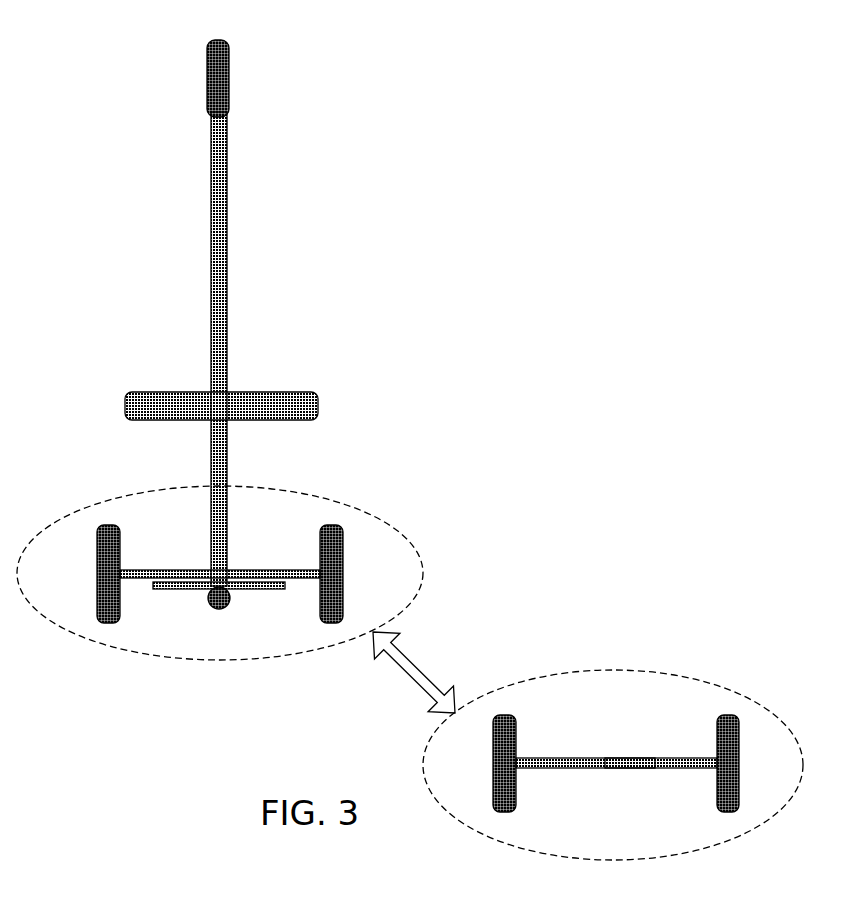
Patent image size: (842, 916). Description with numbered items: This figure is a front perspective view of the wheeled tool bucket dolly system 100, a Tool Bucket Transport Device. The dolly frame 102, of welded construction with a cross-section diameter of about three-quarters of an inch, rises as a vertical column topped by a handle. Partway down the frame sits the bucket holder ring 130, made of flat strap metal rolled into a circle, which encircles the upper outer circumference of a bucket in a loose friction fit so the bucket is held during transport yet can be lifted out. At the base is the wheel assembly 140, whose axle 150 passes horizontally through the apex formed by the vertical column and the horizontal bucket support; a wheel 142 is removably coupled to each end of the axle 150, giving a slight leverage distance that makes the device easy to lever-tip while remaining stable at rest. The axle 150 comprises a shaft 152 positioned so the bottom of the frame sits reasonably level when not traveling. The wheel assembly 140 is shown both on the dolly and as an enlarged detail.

The wheeled tool bucket dolly system 100 is at (393, 305).
The dolly frame 102 is at (230, 252).
The bucket holder ring 130 is at (314, 388).
The wheel assembly 140 is at (410, 656).
The wheel 142 is at (509, 711).
The axle 150 is at (566, 754).
The shaft 152 is at (626, 754).